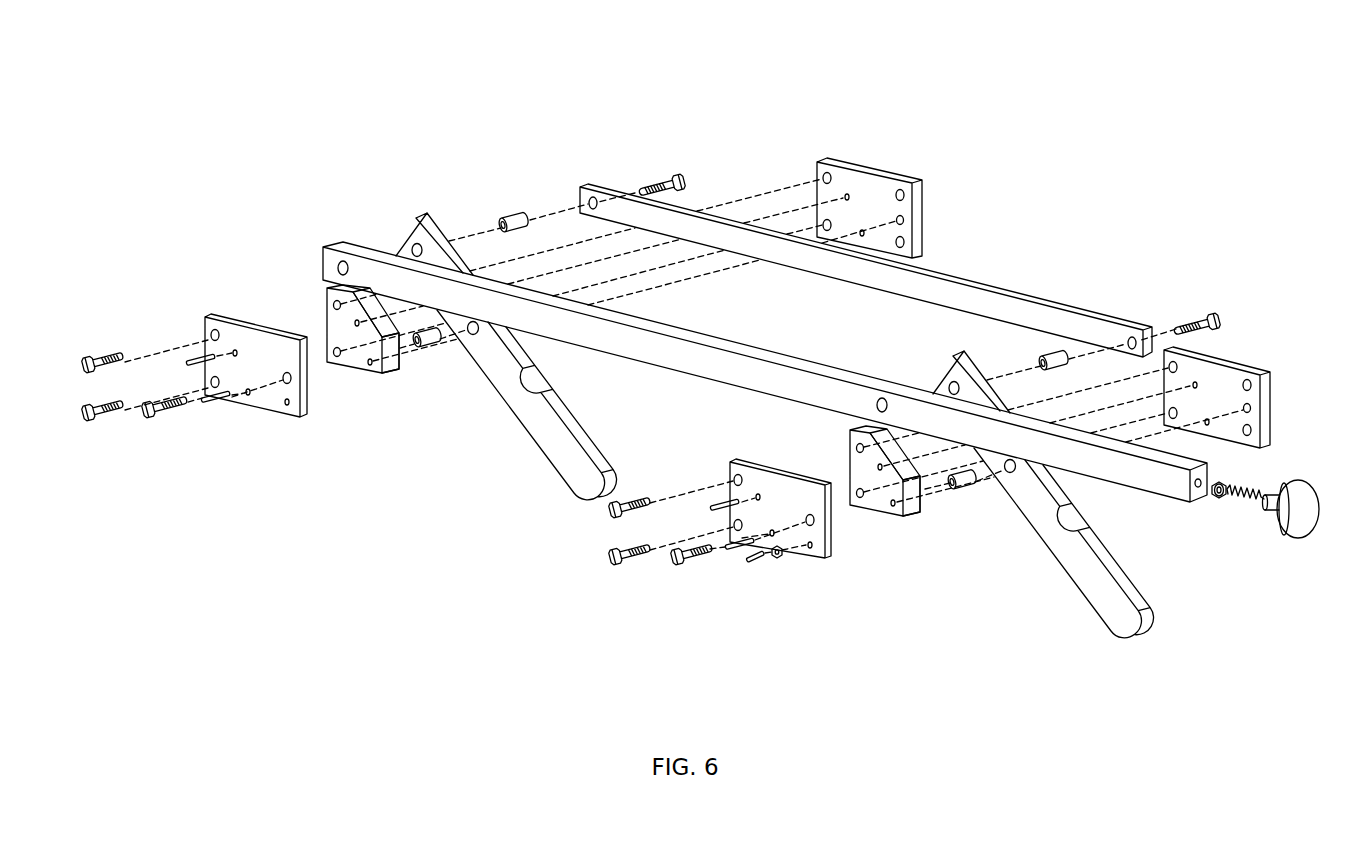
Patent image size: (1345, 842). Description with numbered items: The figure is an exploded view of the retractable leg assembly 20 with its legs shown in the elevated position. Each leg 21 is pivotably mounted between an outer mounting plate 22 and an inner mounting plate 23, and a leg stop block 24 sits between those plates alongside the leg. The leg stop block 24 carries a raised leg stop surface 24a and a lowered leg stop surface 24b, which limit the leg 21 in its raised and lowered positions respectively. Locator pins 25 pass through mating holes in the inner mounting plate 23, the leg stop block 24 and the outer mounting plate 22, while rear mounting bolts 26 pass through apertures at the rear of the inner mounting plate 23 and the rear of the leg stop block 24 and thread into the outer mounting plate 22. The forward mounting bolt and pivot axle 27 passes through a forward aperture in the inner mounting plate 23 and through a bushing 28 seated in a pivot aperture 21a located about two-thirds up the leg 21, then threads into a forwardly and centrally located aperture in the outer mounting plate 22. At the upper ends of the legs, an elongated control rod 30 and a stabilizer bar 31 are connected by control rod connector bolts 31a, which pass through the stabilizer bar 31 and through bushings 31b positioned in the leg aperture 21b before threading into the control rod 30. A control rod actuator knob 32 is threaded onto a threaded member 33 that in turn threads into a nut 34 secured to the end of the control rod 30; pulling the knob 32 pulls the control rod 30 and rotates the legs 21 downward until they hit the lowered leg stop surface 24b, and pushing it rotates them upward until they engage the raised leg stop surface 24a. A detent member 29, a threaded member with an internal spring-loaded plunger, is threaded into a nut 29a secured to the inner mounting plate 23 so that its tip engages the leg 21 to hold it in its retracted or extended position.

The retractable leg assembly 20 is at (1155, 113).
The leg 21 is at (560, 460).
The pivot aperture 21a is at (471, 334).
The leg aperture 21b is at (410, 248).
The outer mounting plate 22 is at (900, 178).
The inner mounting plate 23 is at (270, 403).
The leg stop block 24 is at (372, 368).
The raised leg stop surface 24a is at (373, 312).
The lowered leg stop surface 24b is at (392, 373).
The locator pin 25 is at (187, 359).
The rear mounting bolt 26 is at (83, 413).
The forward mounting bolt and pivot axle 27 is at (142, 415).
The bushing 28 is at (433, 348).
The detent member 29 is at (760, 570).
The nut 29a is at (783, 556).
The control rod 30 is at (692, 362).
The stabilizer bar 31 is at (1043, 302).
The control rod connector bolt 31a is at (680, 173).
The bushing 31b is at (507, 215).
The control rod actuator knob 32 is at (1305, 513).
The threaded member 33 is at (1248, 502).
The nut 34 is at (1215, 500).